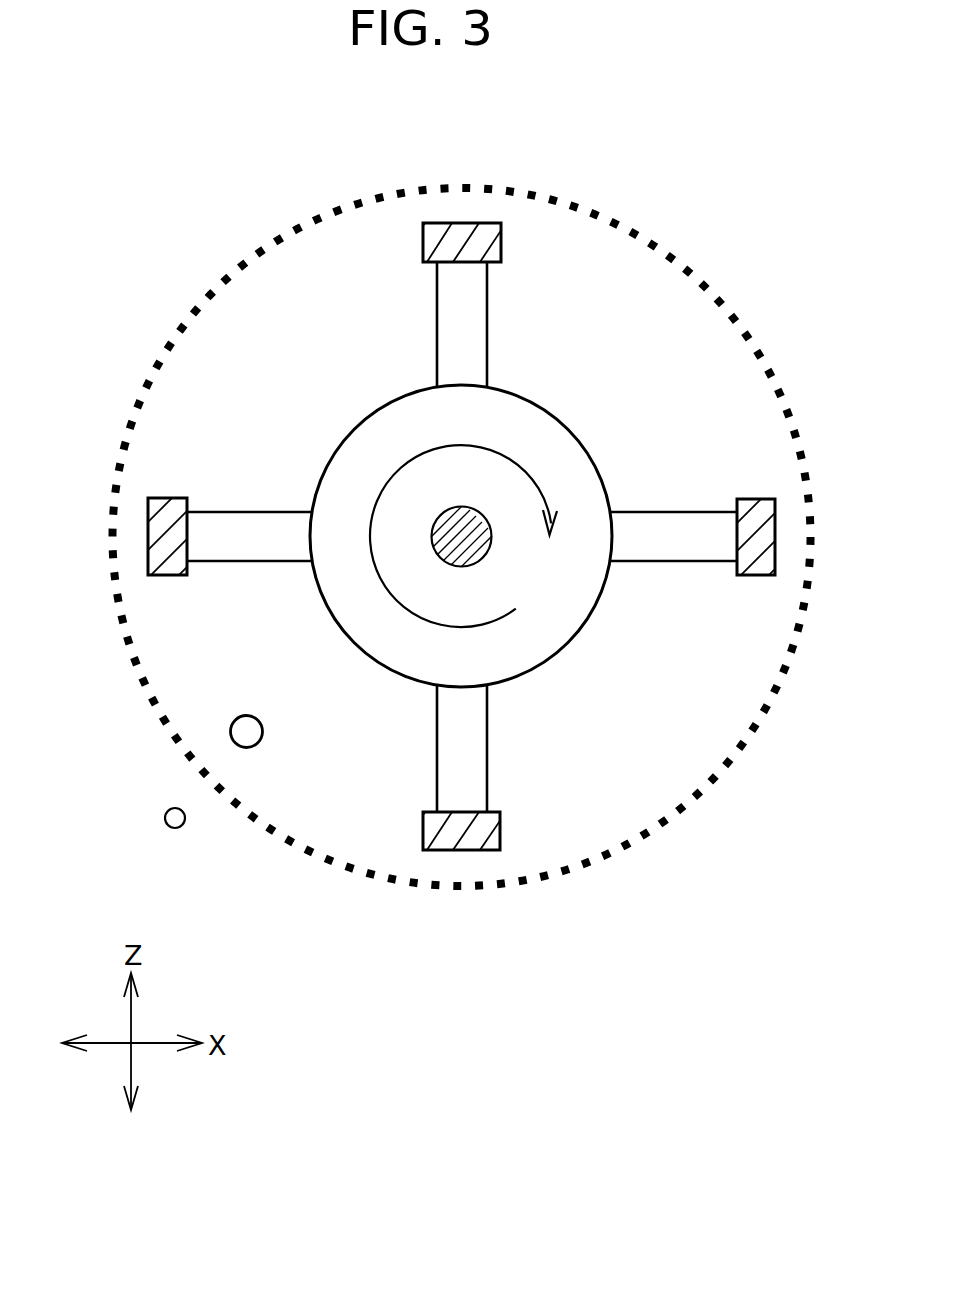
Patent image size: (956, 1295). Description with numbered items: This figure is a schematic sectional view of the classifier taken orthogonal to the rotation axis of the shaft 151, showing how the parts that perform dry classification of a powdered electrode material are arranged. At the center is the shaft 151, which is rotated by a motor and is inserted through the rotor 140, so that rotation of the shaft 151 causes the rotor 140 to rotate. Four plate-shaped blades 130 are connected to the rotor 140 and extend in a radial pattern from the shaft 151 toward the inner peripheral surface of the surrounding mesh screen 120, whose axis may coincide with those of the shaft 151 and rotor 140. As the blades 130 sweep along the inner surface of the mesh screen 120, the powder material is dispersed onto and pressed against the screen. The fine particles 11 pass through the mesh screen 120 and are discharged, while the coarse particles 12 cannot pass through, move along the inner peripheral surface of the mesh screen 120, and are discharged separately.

The mesh screen 120 is at (158, 347).
The rotor 140 is at (587, 443).
The blades 130 is at (500, 833).
The shaft 151 is at (493, 550).
The coarse particles 12 is at (262, 722).
The fine particles 11 is at (165, 825).